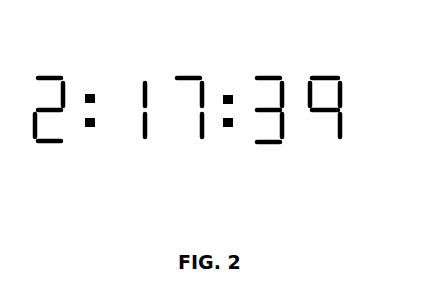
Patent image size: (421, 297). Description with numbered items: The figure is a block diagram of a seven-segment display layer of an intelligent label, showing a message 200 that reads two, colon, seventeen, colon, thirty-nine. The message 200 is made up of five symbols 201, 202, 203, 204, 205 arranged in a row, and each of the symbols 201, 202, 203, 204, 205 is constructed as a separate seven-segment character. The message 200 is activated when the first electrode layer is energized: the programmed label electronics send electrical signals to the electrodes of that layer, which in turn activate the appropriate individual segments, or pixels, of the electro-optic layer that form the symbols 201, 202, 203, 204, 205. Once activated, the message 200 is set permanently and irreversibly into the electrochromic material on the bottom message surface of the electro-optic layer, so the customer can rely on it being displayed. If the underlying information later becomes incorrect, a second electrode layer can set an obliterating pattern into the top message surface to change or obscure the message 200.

The message 200 is at (345, 40).
The symbol 201 is at (53, 147).
The symbol 202 is at (145, 147).
The symbol 203 is at (203, 147).
The symbol 204 is at (263, 156).
The symbol 205 is at (346, 149).